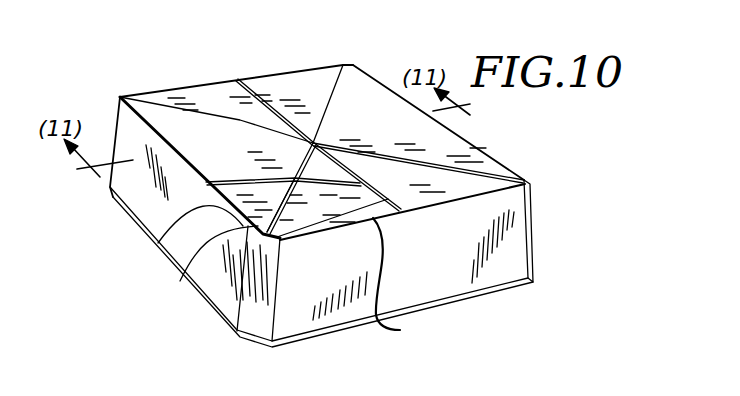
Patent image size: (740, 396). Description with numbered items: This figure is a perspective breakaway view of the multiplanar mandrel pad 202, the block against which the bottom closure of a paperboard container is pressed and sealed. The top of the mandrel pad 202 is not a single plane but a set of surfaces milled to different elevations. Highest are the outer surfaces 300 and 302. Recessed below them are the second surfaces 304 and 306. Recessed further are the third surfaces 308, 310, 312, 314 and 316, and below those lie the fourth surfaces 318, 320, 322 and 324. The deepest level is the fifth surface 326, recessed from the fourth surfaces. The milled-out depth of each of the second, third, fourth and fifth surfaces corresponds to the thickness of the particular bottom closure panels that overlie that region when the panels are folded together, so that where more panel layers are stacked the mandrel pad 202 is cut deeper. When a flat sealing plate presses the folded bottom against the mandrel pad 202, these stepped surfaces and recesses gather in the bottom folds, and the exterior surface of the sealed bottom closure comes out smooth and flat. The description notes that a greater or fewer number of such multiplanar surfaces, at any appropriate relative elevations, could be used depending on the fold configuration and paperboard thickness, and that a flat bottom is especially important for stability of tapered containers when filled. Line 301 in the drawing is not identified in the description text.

The mandrel pad 202 is at (150, 212).
The outer surface 300 is at (246, 165).
The base bottom edge 301 is at (180, 283).
The outer surface 302 is at (446, 146).
The second surface 304 is at (150, 250).
The second surface 306 is at (280, 138).
The third surface 308 is at (333, 153).
The third surface 310 is at (284, 239).
The third surface 312 is at (518, 203).
The third surface 314 is at (325, 95).
The third surface 316 is at (179, 95).
The fourth surface 318 is at (222, 97).
The fourth surface 320 is at (313, 202).
The fourth surface 322 is at (318, 157).
The fourth surface 324 is at (400, 330).
The fifth surface 326 is at (524, 198).